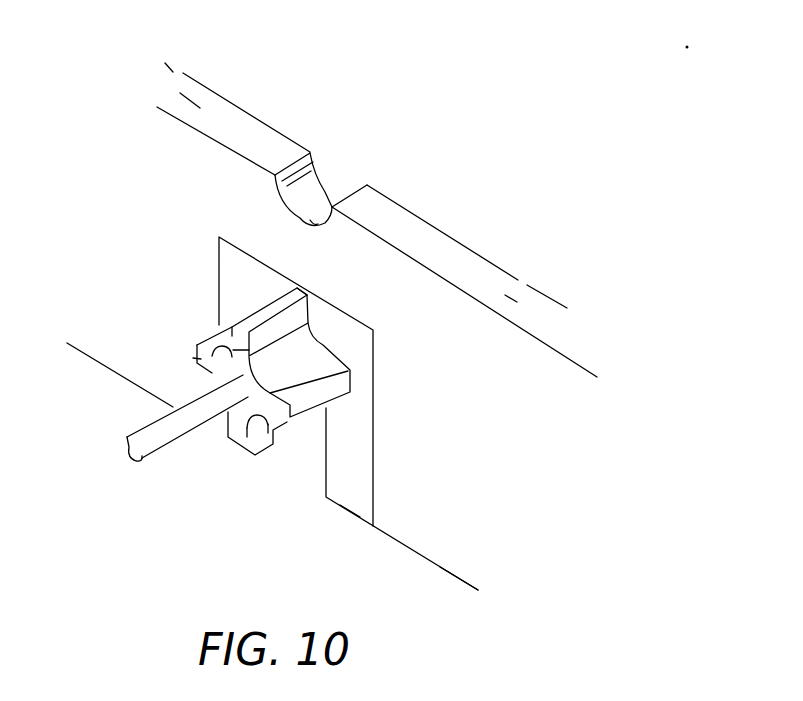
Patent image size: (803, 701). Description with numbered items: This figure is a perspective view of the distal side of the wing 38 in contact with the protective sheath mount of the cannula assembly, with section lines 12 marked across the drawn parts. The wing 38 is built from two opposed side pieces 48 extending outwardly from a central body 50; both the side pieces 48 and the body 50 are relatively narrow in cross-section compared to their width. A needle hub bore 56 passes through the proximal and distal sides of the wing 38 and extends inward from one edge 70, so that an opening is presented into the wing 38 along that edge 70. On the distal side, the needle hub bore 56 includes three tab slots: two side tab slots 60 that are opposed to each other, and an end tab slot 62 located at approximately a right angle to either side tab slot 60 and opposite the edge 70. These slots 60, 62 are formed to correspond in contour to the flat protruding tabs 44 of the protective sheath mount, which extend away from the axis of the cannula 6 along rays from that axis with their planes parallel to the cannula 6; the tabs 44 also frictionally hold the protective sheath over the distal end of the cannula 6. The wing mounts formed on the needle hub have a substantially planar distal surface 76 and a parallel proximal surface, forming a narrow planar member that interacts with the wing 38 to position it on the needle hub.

The cannula 6 is at (157, 428).
The section line 12- 12 is at (178, 142).
The wing 38 is at (472, 135).
The tabs 44 is at (252, 317).
The side pieces 48 is at (226, 180).
The central body 50 is at (360, 485).
The needle hub bore 56 is at (318, 463).
The side tab slots 60 is at (352, 379).
The end tab slot 62 is at (298, 285).
The edge 70 is at (357, 517).
The distal surface 76 is at (516, 558).